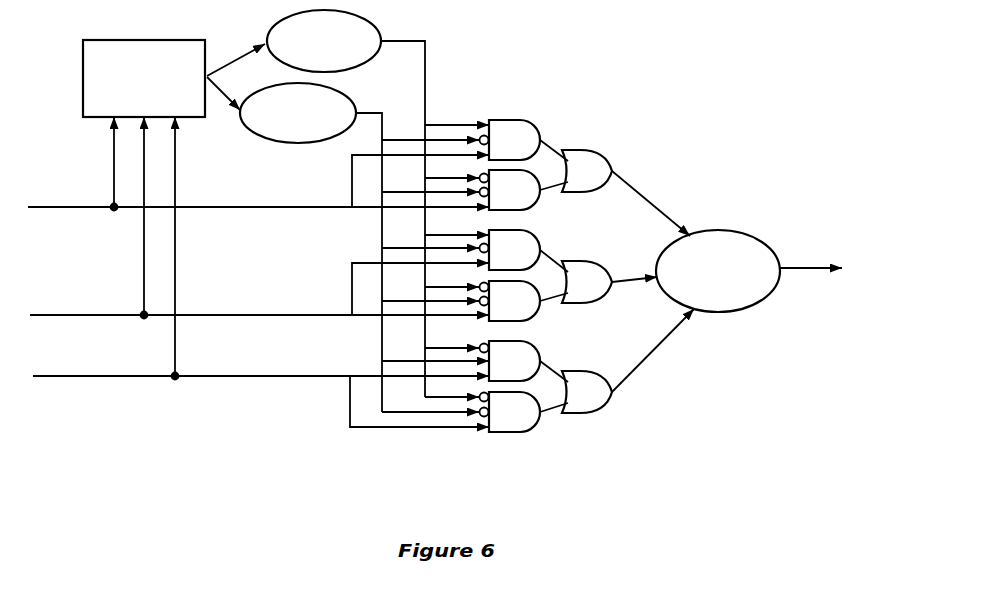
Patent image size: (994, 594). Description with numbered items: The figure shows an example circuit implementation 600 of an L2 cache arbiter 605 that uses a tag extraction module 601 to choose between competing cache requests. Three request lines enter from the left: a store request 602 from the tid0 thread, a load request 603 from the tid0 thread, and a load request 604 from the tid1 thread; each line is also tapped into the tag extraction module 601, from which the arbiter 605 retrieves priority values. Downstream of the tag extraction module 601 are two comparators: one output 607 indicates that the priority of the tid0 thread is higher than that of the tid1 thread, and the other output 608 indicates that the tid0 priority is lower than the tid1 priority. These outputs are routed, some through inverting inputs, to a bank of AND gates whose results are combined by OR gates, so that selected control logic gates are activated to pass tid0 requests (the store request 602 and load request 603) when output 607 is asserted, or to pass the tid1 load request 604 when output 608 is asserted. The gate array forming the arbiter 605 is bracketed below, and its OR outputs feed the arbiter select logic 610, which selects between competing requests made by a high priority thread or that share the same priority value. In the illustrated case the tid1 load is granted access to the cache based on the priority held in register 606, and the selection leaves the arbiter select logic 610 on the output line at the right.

The circuit implementation 600 is at (690, 61).
The tag extraction module 601 is at (157, 100).
The store request 602 is at (88, 196).
The load request 603 is at (90, 306).
The load request 604 is at (92, 370).
The L2 cache arbiter 605 is at (815, 447).
The register 606 is at (825, 223).
The comparator output 607 is at (413, 40).
The comparator output 608 is at (362, 115).
The arbiter select logic 610 is at (755, 293).